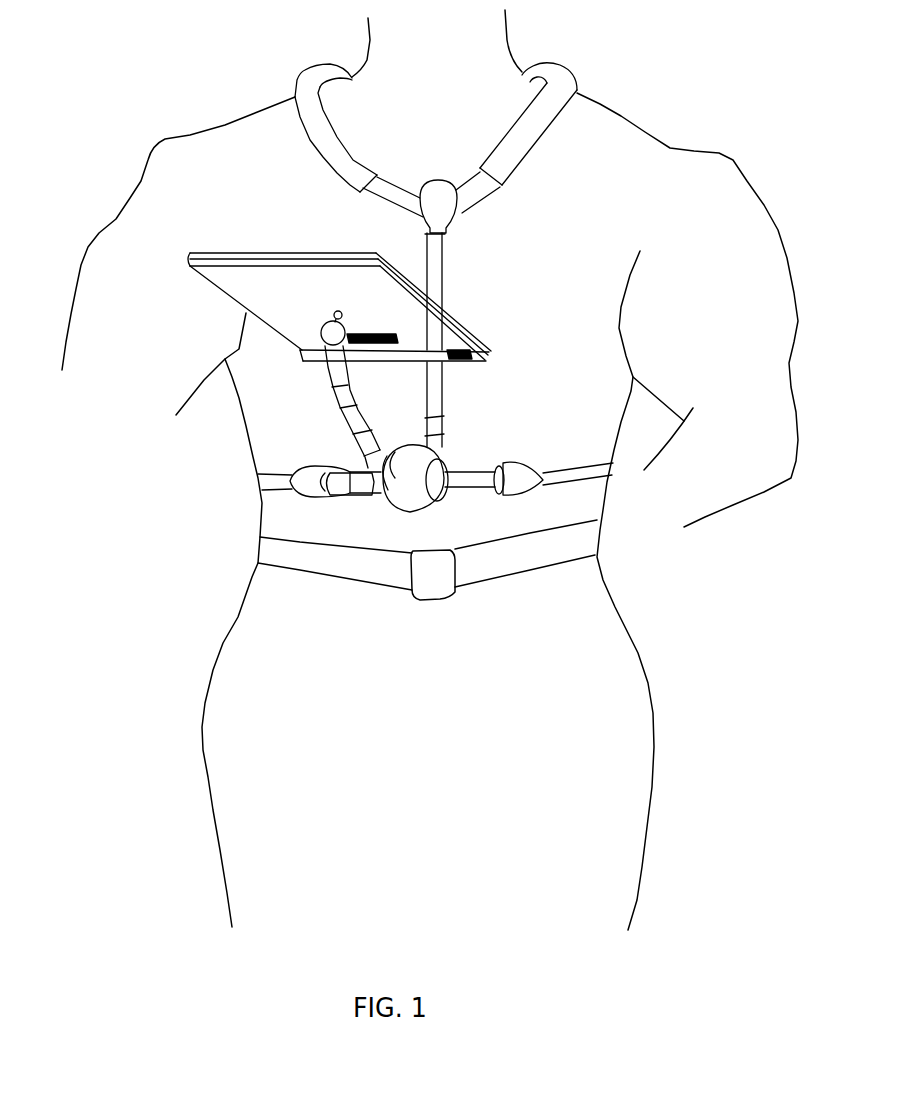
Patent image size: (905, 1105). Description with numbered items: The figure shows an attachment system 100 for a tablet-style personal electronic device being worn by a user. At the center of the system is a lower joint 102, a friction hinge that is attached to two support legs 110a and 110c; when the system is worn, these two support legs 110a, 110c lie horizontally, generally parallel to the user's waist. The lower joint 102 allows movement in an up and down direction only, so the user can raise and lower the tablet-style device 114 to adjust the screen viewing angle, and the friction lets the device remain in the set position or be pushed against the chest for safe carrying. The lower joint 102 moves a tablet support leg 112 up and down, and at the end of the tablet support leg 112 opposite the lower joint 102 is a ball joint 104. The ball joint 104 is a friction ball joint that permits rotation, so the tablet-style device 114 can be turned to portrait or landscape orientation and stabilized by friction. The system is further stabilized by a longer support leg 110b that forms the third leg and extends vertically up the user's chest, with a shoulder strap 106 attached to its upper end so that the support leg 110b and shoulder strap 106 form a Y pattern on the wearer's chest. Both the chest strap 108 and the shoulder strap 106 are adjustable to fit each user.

The attachment system 100 is at (126, 64).
The lower joint 102 is at (417, 503).
The ball joint 104 is at (318, 365).
The shoulder strap 106 is at (558, 83).
The chest strap 108 is at (278, 487).
The support leg 110a is at (358, 480).
The support leg 110b is at (443, 278).
The support leg 110c is at (473, 473).
The tablet support leg 112 is at (354, 421).
The tablet-style device 114 is at (297, 270).